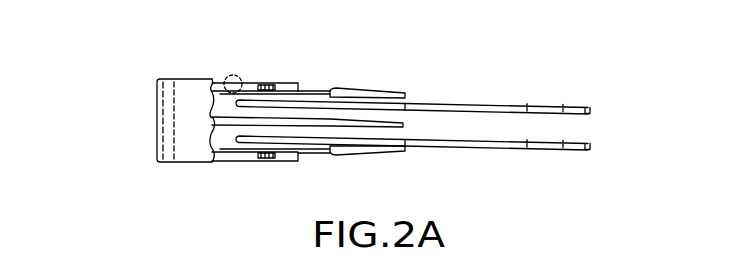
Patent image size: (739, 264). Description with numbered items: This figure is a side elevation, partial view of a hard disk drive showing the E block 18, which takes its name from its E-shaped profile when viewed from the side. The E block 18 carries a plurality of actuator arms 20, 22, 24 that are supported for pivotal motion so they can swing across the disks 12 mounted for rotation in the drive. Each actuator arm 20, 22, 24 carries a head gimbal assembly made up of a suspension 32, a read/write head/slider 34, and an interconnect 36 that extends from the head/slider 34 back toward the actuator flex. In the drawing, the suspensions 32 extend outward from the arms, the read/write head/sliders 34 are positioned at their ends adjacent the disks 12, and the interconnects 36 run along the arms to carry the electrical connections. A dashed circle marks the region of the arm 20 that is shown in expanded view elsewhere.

The disk 12 is at (570, 143).
The E block 18 is at (141, 165).
The actuator arm 20 is at (222, 83).
The actuator arm 22 is at (213, 119).
The actuator arm 24 is at (220, 161).
The suspension 32 is at (308, 90).
The read/write head/slider 34 is at (405, 103).
The interconnect 36 is at (257, 92).